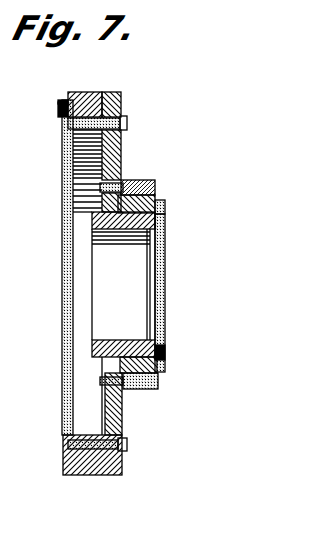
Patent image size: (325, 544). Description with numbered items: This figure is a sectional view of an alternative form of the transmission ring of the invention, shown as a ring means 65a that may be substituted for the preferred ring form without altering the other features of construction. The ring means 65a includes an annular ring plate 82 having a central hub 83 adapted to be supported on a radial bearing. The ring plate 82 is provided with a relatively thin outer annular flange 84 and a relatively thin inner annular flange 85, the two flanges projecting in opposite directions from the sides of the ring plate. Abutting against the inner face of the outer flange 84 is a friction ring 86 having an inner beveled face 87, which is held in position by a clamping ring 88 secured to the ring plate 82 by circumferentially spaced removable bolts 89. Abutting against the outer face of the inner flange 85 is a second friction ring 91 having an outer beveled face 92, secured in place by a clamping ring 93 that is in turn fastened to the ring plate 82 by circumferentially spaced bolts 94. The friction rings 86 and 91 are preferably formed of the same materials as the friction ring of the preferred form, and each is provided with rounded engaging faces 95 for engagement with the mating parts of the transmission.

The ring means 65a is at (128, 155).
The annular ring plate 82 is at (121, 172).
The central hub 83 is at (92, 217).
The outer annular flange 84 is at (86, 92).
The inner annular flange 85 is at (165, 221).
The friction ring 86 is at (106, 100).
The inner beveled face 87 is at (60, 117).
The clamping ring 88 is at (63, 140).
The removable bolts 89 is at (127, 120).
The friction ring 91 is at (164, 356).
The outer beveled face 92 is at (158, 367).
The clamping ring 93 is at (152, 389).
The bolts 94 is at (156, 186).
The rounded engaging faces 95 is at (62, 102).